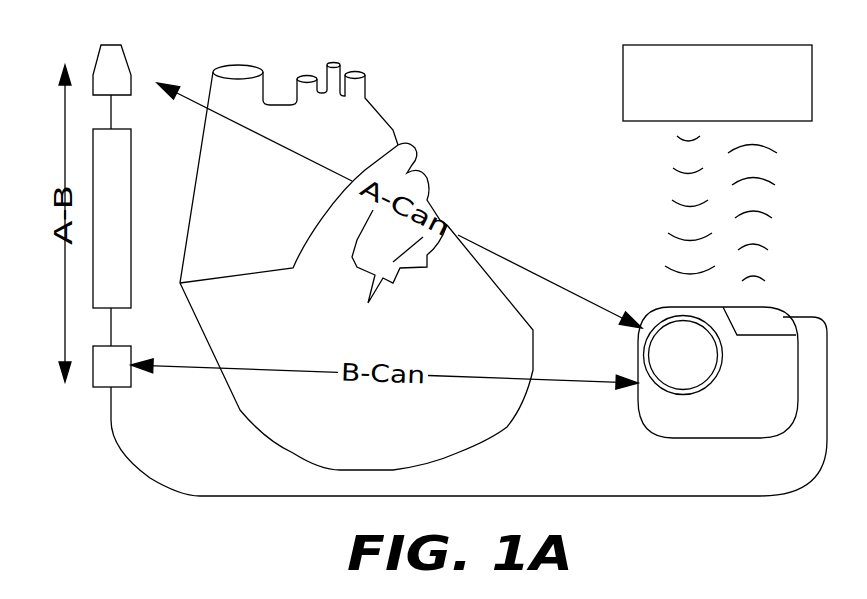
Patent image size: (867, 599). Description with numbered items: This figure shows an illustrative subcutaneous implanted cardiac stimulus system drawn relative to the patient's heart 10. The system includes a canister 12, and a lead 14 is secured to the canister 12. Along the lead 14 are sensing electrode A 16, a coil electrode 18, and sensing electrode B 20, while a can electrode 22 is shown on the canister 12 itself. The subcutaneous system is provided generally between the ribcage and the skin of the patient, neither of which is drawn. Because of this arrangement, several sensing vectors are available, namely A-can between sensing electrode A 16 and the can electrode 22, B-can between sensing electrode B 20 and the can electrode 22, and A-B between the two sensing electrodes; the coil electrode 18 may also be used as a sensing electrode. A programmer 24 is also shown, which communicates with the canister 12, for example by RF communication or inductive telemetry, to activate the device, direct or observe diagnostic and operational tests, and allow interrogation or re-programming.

The heart 10 is at (392, 78).
The canister 12 is at (717, 423).
The lead 14 is at (492, 495).
The sensing electrode A 16 is at (124, 66).
The coil electrode 18 is at (102, 190).
The sensing electrode B 20 is at (108, 380).
The can electrode 22 is at (677, 332).
The programmer 24 is at (678, 58).